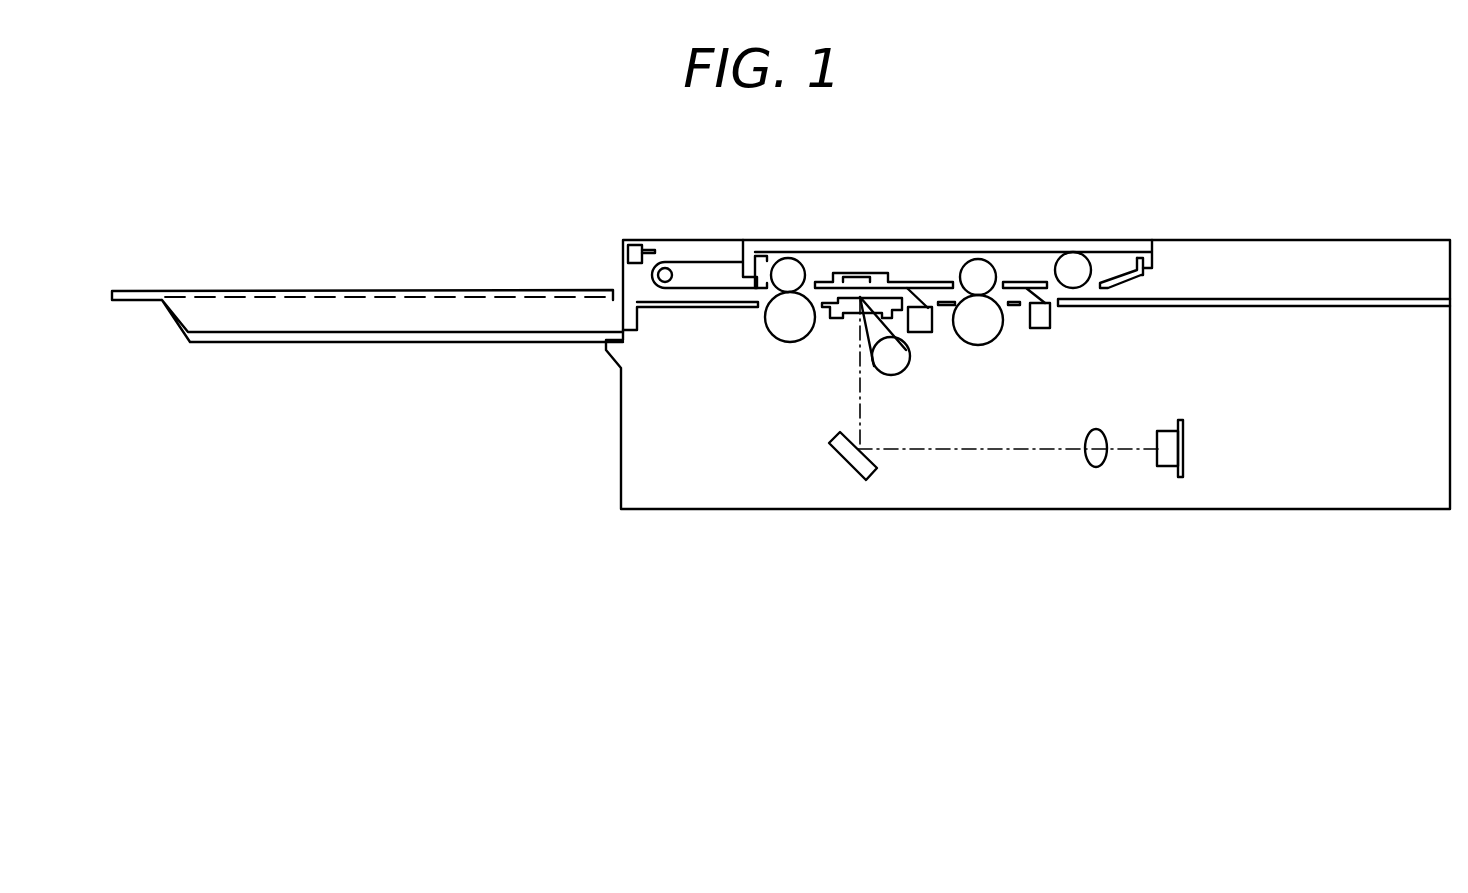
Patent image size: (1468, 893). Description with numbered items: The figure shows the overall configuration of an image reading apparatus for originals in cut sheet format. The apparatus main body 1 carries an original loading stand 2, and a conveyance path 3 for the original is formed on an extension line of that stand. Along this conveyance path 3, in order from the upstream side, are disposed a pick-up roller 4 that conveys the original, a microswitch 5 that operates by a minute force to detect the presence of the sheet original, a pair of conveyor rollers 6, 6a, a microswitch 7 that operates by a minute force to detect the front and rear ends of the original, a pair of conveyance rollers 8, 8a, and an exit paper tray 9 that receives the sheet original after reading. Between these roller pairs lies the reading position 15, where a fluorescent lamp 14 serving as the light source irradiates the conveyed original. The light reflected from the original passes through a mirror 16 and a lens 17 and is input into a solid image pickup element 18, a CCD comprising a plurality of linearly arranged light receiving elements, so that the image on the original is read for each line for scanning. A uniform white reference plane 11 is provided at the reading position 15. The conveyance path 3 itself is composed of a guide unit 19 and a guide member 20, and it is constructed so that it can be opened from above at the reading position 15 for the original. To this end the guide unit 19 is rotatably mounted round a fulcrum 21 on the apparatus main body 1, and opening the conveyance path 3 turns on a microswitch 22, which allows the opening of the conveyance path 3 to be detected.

The apparatus main body 1 is at (1238, 238).
The original loading stand 2 is at (1308, 298).
The conveyance path 3 is at (828, 293).
The pick-up roller 4 is at (1072, 265).
The microswitch 5 is at (1043, 315).
The conveyor roller 6 is at (984, 332).
The conveyor roller 6a is at (975, 268).
The microswitch 7 is at (921, 323).
The conveyance roller 8 is at (783, 327).
The conveyance roller 8a is at (783, 272).
The exit paper tray 9 is at (380, 343).
The white reference plane 11 is at (870, 283).
The fluorescent lamp 14 is at (893, 362).
The reading position 15 is at (868, 292).
The mirror 16 is at (860, 470).
The lens 17 is at (1096, 458).
The solid image pickup element (CCD) 18 is at (1167, 457).
The guide unit 19 is at (787, 245).
The guide member 20 is at (948, 307).
The fulcrum 21 is at (665, 268).
The microswitch 22 is at (633, 247).